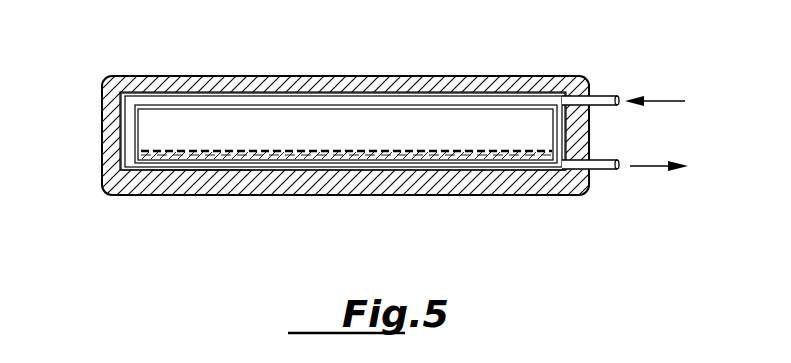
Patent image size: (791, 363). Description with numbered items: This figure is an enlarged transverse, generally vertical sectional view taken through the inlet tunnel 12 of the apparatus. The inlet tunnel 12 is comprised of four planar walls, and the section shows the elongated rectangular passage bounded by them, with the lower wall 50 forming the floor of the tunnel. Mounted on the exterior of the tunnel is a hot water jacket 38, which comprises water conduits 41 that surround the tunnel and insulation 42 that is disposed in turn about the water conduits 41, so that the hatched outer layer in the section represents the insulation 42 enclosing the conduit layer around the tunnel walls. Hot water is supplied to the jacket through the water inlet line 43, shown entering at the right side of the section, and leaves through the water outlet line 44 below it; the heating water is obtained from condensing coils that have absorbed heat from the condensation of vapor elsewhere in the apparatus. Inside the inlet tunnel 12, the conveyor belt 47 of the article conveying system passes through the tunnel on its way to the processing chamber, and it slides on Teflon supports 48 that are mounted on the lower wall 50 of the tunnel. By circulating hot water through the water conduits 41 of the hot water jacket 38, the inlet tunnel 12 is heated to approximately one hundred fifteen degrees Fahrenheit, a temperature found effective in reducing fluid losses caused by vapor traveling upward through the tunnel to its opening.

The hot water jacket 38 is at (110, 112).
The inlet tunnel 12 is at (272, 118).
The water conduits 41 is at (523, 171).
The conveyor belt 47 is at (395, 152).
The Teflon supports 48 is at (273, 194).
The water inlet line 43 is at (597, 99).
The water outlet line 44 is at (607, 171).
The insulation 42 is at (238, 196).
The lower wall 50 is at (193, 172).